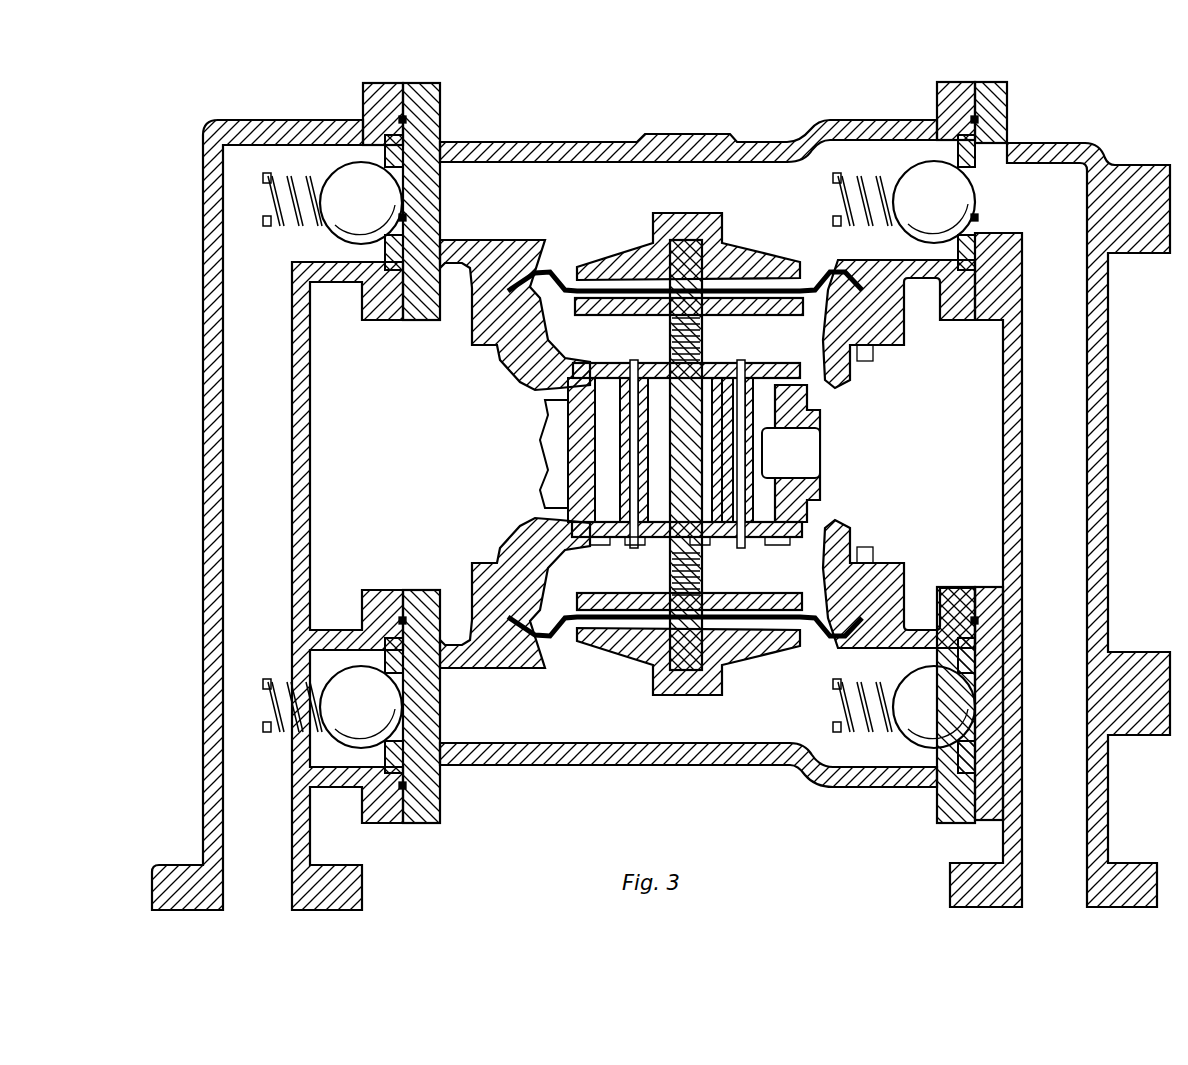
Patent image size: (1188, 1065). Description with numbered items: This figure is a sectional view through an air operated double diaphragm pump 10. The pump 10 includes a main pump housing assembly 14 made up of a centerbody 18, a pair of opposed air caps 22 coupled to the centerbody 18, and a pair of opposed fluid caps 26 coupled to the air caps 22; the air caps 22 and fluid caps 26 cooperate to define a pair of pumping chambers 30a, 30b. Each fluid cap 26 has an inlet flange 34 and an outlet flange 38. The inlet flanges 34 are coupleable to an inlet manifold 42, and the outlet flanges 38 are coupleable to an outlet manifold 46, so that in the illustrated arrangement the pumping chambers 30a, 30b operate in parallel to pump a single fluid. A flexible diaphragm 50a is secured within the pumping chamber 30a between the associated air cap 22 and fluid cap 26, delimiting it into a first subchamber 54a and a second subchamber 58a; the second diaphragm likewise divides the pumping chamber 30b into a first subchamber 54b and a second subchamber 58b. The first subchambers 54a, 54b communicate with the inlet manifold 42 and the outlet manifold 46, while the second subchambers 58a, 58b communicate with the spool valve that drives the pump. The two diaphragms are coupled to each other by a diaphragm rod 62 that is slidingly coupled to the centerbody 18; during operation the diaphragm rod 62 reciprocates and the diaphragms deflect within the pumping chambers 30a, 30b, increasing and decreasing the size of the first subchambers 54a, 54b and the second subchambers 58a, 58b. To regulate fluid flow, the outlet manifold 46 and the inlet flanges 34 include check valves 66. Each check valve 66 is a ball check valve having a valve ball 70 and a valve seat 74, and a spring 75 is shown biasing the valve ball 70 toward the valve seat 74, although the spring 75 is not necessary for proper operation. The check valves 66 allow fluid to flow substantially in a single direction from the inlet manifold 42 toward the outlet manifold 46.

The air operated double diaphragm pump 10 is at (1080, 118).
The main pump housing assembly 14 is at (422, 427).
The centerbody 18 is at (815, 420).
The air caps 22 is at (895, 338).
The fluid caps 26 is at (710, 137).
The pumping chamber 30a is at (598, 170).
The pumping chamber 30b is at (547, 722).
The inlet flange 34 is at (937, 92).
The outlet flange 38 is at (440, 101).
The inlet manifold 42 is at (1097, 396).
The outlet manifold 46 is at (212, 397).
The flexible diaphragm 50a is at (822, 272).
The first subchamber 54a is at (620, 703).
The first subchamber 54b is at (630, 225).
The second subchamber 58a is at (797, 585).
The second subchamber 58b is at (620, 345).
The diaphragm rod 62 is at (683, 535).
The check valve 66 is at (311, 751).
The valve ball 70 is at (378, 190).
The valve seat 74 is at (397, 232).
The spring 75 is at (280, 228).